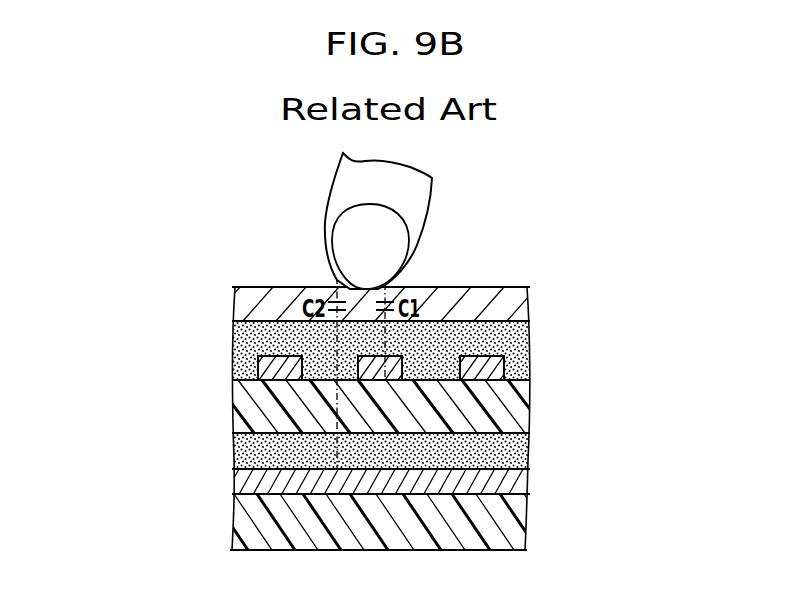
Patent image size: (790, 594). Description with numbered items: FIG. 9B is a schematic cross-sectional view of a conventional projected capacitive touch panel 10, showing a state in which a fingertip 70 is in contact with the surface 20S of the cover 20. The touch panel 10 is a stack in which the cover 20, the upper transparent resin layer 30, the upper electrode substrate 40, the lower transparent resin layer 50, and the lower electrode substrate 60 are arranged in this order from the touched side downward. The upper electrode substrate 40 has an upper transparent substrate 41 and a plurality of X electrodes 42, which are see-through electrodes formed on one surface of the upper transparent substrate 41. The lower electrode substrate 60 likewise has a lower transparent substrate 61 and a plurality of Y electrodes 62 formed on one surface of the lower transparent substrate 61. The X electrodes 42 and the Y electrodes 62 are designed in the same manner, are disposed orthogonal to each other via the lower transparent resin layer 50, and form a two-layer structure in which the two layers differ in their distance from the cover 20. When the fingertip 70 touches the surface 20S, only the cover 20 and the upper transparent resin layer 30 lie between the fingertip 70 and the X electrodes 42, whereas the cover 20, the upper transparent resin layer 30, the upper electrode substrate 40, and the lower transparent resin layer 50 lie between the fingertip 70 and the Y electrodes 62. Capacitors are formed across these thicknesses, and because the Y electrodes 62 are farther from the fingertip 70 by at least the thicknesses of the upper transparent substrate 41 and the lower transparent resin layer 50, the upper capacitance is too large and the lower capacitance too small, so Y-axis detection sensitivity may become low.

The touch panel 10 is at (425, 394).
The cover 20 is at (515, 305).
The surface of cover 20S is at (492, 286).
The upper transparent resin layer 30 is at (493, 342).
The upper electrode substrate 40 is at (403, 392).
The upper transparent substrate 41 is at (393, 406).
The X electrodes 42 is at (488, 372).
The lower transparent resin layer 50 is at (508, 453).
The lower electrode substrate 60 is at (413, 509).
The lower transparent substrate 61 is at (398, 522).
The Y electrodes 62 is at (507, 483).
The fingertip 70 is at (342, 195).